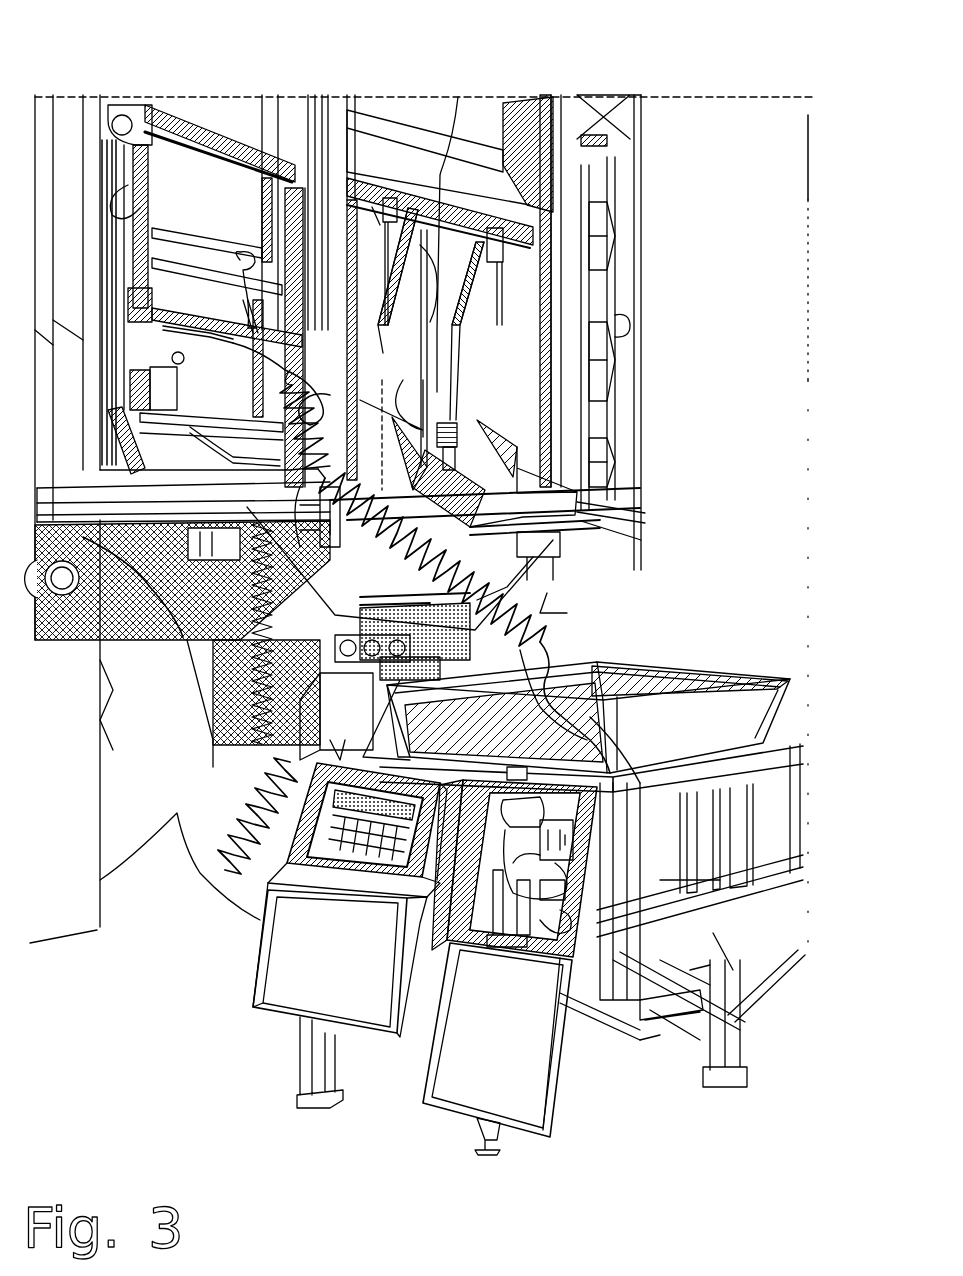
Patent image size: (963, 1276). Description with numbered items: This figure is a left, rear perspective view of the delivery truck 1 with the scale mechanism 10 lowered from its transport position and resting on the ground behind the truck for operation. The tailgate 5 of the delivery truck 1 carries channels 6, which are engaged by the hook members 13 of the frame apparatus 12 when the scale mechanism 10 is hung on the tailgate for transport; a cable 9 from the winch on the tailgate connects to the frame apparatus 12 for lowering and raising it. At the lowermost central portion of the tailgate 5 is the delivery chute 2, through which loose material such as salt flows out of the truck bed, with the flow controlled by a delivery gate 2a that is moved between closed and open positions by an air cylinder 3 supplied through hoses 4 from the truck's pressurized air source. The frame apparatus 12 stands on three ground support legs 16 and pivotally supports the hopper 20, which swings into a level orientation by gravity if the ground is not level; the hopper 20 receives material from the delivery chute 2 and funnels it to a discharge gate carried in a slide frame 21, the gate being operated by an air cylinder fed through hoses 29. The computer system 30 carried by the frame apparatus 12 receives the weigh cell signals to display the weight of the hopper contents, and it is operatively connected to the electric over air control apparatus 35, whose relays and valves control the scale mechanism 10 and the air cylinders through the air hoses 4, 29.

The delivery truck 1 is at (657, 80).
The delivery chute 2 is at (540, 539).
The delivery gate 2a is at (470, 447).
The air cylinder 3 is at (415, 308).
The hoses 4 is at (520, 385).
The tailgate 5 is at (604, 244).
The channels 6 is at (330, 105).
The cable 9 is at (431, 125).
The scale mechanism 10 is at (227, 968).
The frame apparatus 12 is at (777, 747).
The hook members 13 is at (345, 740).
The ground support legs 16 is at (300, 1060).
The hopper 20 is at (693, 640).
The slide frame 21 is at (667, 1027).
The hoses 29 is at (533, 653).
The computer system 30 is at (350, 893).
The electric over air control apparatus 35 is at (516, 953).